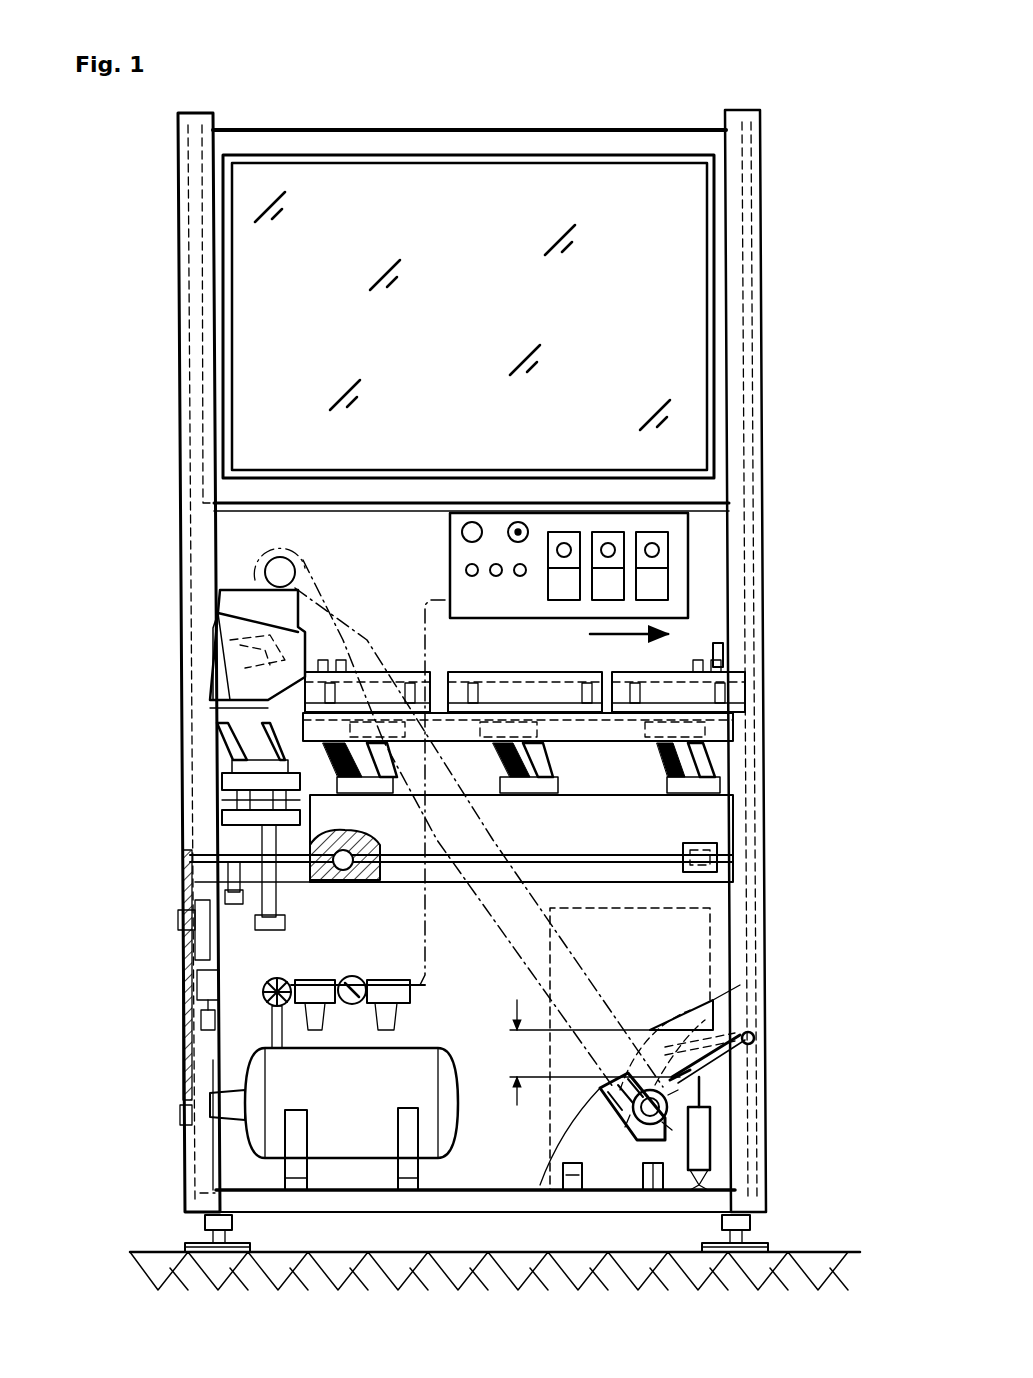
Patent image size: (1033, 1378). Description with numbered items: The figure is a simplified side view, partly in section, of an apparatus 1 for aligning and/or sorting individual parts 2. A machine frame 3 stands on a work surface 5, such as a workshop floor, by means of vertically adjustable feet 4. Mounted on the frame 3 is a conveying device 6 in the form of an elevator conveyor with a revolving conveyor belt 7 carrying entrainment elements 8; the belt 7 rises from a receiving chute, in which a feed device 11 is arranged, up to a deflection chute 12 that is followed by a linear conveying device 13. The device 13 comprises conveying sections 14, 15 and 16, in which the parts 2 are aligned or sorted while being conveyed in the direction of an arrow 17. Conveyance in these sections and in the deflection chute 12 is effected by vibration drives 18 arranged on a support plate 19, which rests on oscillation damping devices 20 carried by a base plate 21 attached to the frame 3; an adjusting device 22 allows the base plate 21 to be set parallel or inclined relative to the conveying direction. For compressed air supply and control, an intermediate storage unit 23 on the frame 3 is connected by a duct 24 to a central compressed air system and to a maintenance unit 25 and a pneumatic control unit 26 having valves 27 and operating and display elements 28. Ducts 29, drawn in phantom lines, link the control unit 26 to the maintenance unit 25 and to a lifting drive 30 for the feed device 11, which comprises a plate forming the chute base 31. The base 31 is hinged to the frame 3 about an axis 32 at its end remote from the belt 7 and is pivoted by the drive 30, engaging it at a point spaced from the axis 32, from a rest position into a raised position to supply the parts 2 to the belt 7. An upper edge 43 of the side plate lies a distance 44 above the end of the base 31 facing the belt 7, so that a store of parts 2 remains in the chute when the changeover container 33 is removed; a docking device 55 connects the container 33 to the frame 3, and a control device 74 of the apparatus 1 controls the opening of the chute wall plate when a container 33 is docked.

The apparatus 1 is at (755, 80).
The individual parts 2 is at (230, 658).
The machine frame 3 is at (165, 352).
The vertically adjustable feet 4 is at (195, 1262).
The work surface 5 is at (440, 1254).
The conveying device 6 is at (625, 1000).
The revolving conveyor belt 7 is at (655, 1010).
The entrainment elements 8 is at (655, 1192).
The feed device 11 is at (670, 1105).
The deflection chute 12 is at (220, 665).
The linear conveying device 13 is at (680, 655).
The conveying section 14 is at (402, 660).
The conveying section 15 is at (555, 670).
The conveying section 16 is at (725, 655).
The arrow 17 is at (620, 632).
The vibration drives 18 is at (225, 748).
The support plate 19 is at (225, 782).
The oscillation damping devices 20 is at (312, 856).
The base plate 21 is at (225, 818).
The adjusting device 22 is at (180, 950).
The intermediate storage unit 23 is at (365, 1140).
The duct 24 is at (240, 1100).
The maintenance unit 25 is at (318, 1025).
The pneumatic control unit 26 is at (700, 532).
The valves 27 is at (668, 580).
The operating and display elements 28 is at (518, 522).
The ducts 29 is at (422, 920).
The lifting drive 30 is at (712, 1142).
The chute base 31 is at (735, 1050).
The axis 32 is at (755, 1038).
The changeover container 33 is at (620, 1145).
The upper edge 43 is at (700, 1022).
The distance 44 is at (517, 1060).
The docking device 55 is at (565, 1188).
The control device 74 is at (548, 493).